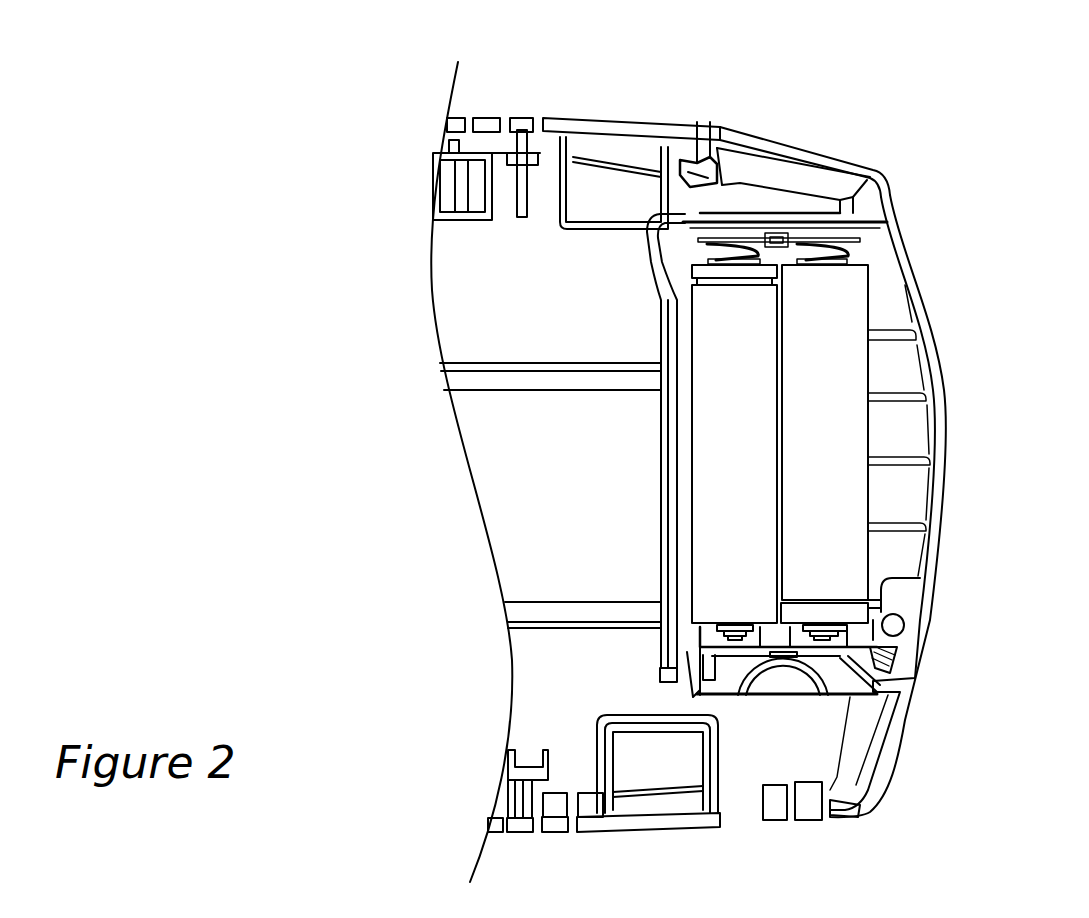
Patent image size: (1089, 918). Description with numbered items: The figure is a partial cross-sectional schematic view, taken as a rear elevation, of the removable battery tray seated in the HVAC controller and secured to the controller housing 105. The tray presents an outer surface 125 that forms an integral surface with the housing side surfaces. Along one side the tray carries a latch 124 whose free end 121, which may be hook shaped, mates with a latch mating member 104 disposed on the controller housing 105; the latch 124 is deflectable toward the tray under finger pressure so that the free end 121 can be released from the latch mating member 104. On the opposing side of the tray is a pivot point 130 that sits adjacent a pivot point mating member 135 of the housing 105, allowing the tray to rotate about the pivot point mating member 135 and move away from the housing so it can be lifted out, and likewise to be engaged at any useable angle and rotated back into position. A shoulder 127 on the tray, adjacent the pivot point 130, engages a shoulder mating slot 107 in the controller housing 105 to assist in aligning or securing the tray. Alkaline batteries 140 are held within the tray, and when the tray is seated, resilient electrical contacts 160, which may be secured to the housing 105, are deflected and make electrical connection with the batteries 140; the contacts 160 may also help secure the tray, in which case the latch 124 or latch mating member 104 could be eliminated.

The latch mating member 104 is at (703, 125).
The controller housing 105 is at (565, 118).
The shoulder mating slot 107 is at (695, 697).
The free end 121 is at (718, 150).
The latch 124 is at (808, 157).
The outer surface 125 is at (945, 487).
The shoulder 127 is at (660, 663).
The pivot point 130 is at (920, 578).
The pivot point mating member 135 is at (903, 628).
The alkaline batteries 140 is at (828, 373).
The electrical contacts 160 is at (738, 642).